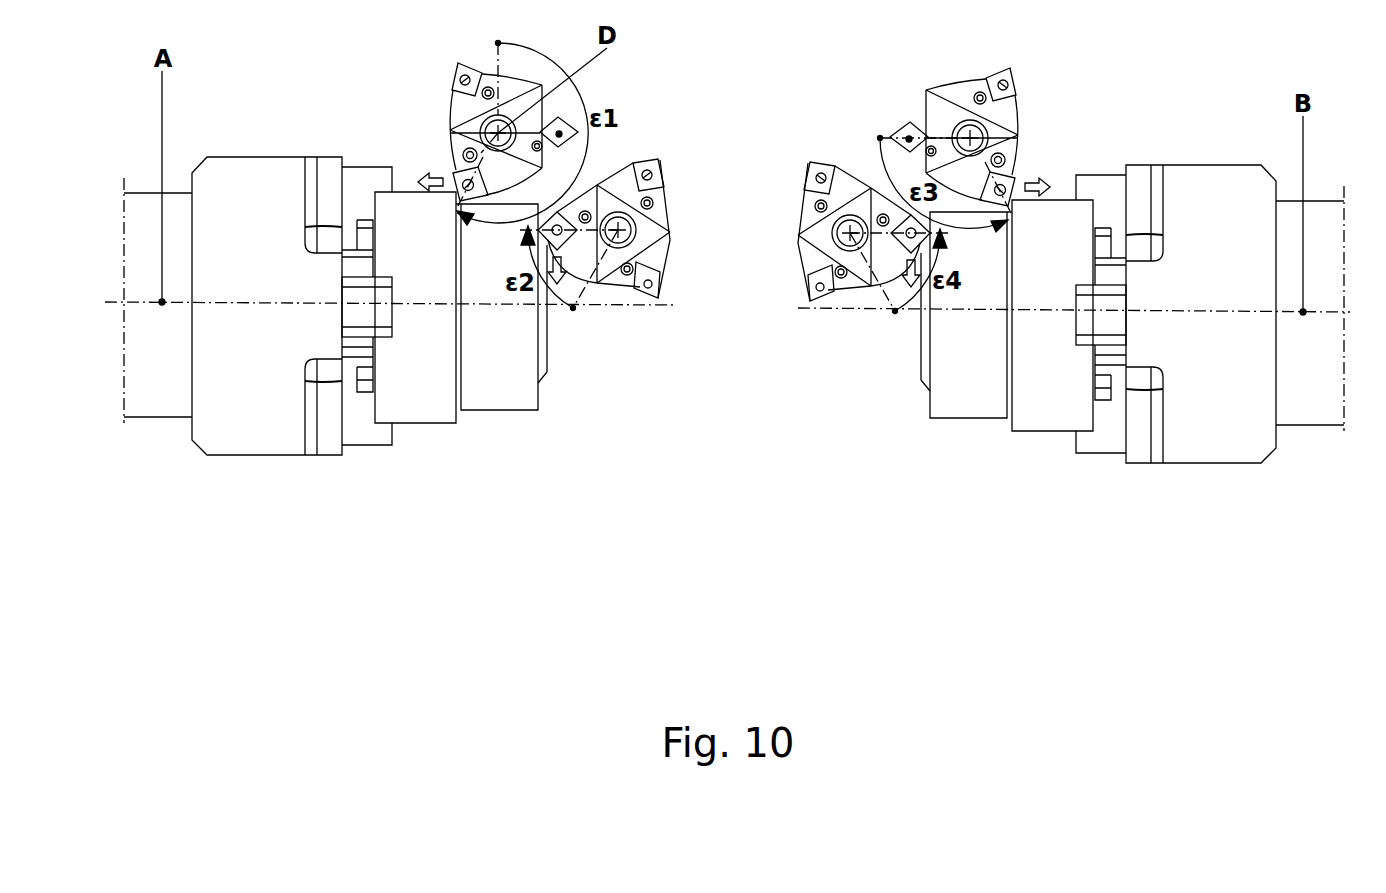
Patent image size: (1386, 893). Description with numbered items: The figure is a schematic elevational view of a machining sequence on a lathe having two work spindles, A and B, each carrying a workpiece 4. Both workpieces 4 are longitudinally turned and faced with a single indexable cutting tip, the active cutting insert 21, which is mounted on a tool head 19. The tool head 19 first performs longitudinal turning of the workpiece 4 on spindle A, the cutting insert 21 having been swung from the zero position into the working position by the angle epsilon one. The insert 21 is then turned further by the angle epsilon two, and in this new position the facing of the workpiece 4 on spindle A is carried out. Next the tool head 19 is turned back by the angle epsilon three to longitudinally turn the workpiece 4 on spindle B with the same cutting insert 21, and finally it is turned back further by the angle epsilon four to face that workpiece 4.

The workpiece 4 is at (967, 376).
The tool head 19 is at (470, 130).
The cutting insert 21 is at (455, 177).